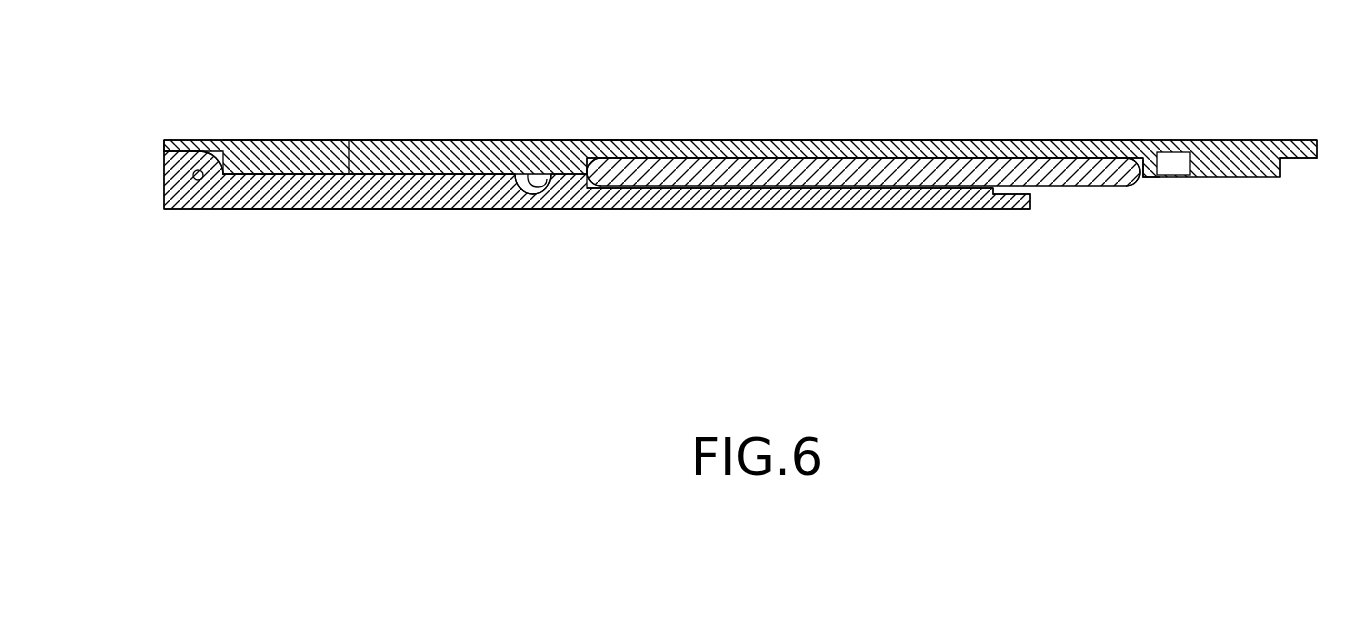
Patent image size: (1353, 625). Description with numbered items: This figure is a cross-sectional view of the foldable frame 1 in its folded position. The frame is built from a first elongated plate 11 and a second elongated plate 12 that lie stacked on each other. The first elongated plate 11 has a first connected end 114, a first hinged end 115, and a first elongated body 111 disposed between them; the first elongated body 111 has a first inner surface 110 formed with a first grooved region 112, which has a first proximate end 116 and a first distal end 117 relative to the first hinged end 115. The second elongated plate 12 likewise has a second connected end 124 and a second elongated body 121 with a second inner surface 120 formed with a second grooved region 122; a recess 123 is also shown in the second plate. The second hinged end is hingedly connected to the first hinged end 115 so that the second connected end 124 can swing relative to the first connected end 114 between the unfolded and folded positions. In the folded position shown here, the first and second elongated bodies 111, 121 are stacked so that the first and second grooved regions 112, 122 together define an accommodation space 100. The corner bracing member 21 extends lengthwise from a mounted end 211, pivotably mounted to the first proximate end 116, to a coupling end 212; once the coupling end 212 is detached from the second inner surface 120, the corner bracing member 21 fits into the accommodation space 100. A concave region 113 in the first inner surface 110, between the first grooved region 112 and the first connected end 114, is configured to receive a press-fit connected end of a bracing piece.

The foldable frame 1 is at (162, 129).
The first elongated plate 11 is at (465, 140).
The second elongated plate 12 is at (490, 200).
The corner bracing member 21 is at (1075, 186).
The accommodation space 100 is at (572, 166).
The first inner surface 110 is at (1145, 165).
The first elongated body 111 is at (395, 148).
The first grooved region 112 is at (876, 157).
The concave region 113 is at (1175, 162).
The first connected end 114 is at (1295, 147).
The first hinged end 115 is at (197, 140).
The first proximate end 116 is at (580, 170).
The first distal end 117 is at (1142, 162).
The second inner surface 120 is at (349, 140).
The second elongated body 121 is at (427, 192).
The second grooved region 122 is at (695, 186).
The recess of base plate 123 is at (547, 193).
The second connected end 124 is at (1010, 209).
The mounted end 211 is at (588, 157).
The coupling end 212 is at (1137, 190).